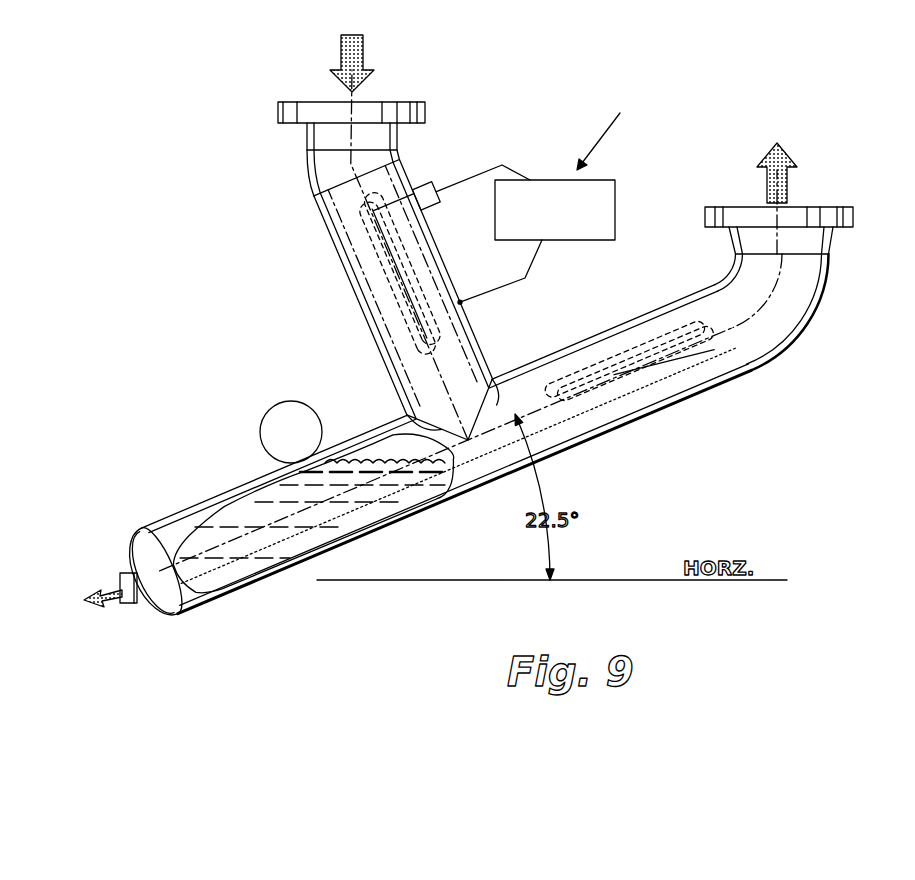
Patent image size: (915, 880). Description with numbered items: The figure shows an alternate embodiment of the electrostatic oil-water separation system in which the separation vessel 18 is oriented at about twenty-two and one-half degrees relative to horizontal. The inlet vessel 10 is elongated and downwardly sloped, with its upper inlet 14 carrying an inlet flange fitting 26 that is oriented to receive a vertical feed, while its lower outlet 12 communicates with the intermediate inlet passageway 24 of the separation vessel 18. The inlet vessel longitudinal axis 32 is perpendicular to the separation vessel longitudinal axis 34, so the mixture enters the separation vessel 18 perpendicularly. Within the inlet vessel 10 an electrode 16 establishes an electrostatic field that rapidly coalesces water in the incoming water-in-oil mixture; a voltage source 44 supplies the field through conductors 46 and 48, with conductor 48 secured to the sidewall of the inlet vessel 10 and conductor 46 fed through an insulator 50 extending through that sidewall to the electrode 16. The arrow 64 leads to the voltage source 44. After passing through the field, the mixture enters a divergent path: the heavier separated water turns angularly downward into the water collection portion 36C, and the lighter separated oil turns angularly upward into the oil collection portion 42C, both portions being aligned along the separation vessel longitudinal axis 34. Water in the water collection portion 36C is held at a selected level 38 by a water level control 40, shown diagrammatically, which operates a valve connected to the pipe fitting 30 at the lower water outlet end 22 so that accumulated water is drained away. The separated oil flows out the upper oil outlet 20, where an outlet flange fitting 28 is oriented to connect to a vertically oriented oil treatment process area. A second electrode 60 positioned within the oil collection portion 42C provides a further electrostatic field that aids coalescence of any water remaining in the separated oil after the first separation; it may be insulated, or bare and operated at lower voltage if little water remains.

The inlet vessel 10 is at (335, 240).
The lower outlet end 12 is at (497, 380).
The upper inlet 14 is at (360, 182).
The electrode 16 is at (393, 300).
The separation vessel 18 is at (580, 452).
The upper oil outlet end 20 is at (767, 347).
The lower water outlet end 22 is at (160, 612).
The intermediate inlet passageway 24 is at (410, 413).
The inlet flange fitting 26 is at (278, 105).
The outlet flange fitting 28 is at (840, 207).
The pipe fitting 30 is at (132, 578).
The inlet vessel longitudinal axis 32 is at (380, 354).
The separation vessel longitudinal axis 34 is at (300, 550).
The water collection portion 36C is at (247, 593).
The water level 38 is at (445, 495).
The water level control 40 is at (260, 425).
The oil collection portion 42C is at (660, 417).
The voltage source 44 is at (613, 182).
The conductor 46 is at (515, 168).
The conductor 48 is at (510, 280).
The insulator 50 is at (430, 186).
The second electrode 60 is at (651, 345).
The electrical connection arrow 64 is at (607, 130).